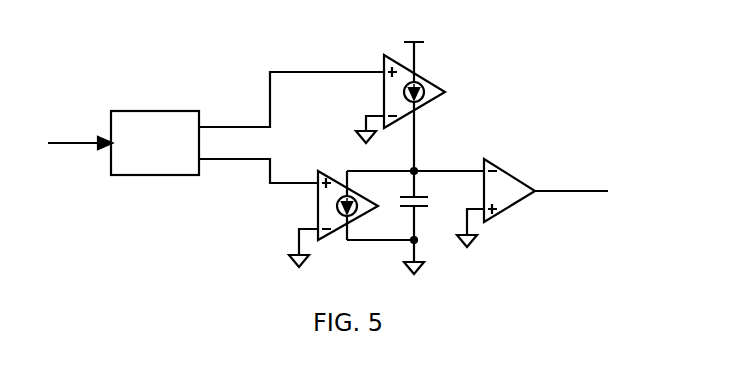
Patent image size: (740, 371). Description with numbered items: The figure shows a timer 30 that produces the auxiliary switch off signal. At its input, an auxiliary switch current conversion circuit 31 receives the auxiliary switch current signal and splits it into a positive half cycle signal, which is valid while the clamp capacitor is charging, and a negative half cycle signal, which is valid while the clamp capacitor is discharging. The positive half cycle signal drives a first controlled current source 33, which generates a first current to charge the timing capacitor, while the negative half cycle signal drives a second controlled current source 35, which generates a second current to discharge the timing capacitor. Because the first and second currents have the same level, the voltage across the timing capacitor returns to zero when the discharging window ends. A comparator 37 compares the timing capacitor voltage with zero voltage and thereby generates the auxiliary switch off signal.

The timer 30 is at (511, 22).
The auxiliary switch current conversion circuit 31 is at (168, 110).
The first controlled current source 33 is at (425, 81).
The second controlled current source 35 is at (319, 169).
The comparator 37 is at (502, 170).